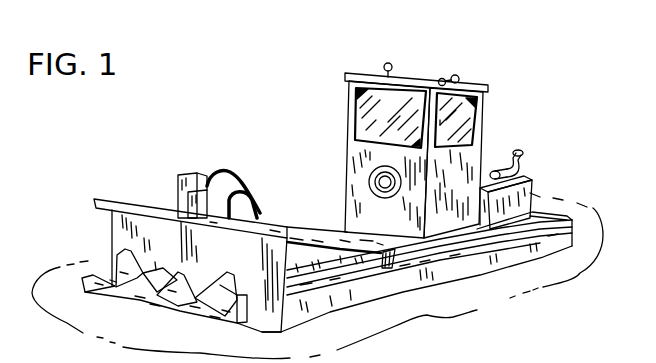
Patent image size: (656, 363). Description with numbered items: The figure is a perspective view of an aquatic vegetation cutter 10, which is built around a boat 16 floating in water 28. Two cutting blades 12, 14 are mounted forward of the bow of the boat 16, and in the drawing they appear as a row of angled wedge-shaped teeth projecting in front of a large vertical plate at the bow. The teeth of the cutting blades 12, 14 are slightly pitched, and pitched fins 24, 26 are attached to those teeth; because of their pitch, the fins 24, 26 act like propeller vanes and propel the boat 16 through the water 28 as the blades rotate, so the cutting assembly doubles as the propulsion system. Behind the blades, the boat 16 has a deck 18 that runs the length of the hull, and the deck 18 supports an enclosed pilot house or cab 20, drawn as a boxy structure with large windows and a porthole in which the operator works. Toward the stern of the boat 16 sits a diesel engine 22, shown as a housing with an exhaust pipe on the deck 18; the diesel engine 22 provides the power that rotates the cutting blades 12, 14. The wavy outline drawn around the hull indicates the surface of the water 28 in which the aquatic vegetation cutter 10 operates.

The aquatic vegetation cutter 10 is at (266, 126).
The cutting blade 12 is at (123, 297).
The cutting blade 14 is at (218, 320).
The boat 16 is at (379, 290).
The deck 18 is at (327, 230).
The pilot house 20 is at (362, 75).
The diesel engine 22 is at (522, 198).
The pitched fin 24 is at (112, 262).
The pitched fin 26 is at (192, 285).
The water 28 is at (477, 300).